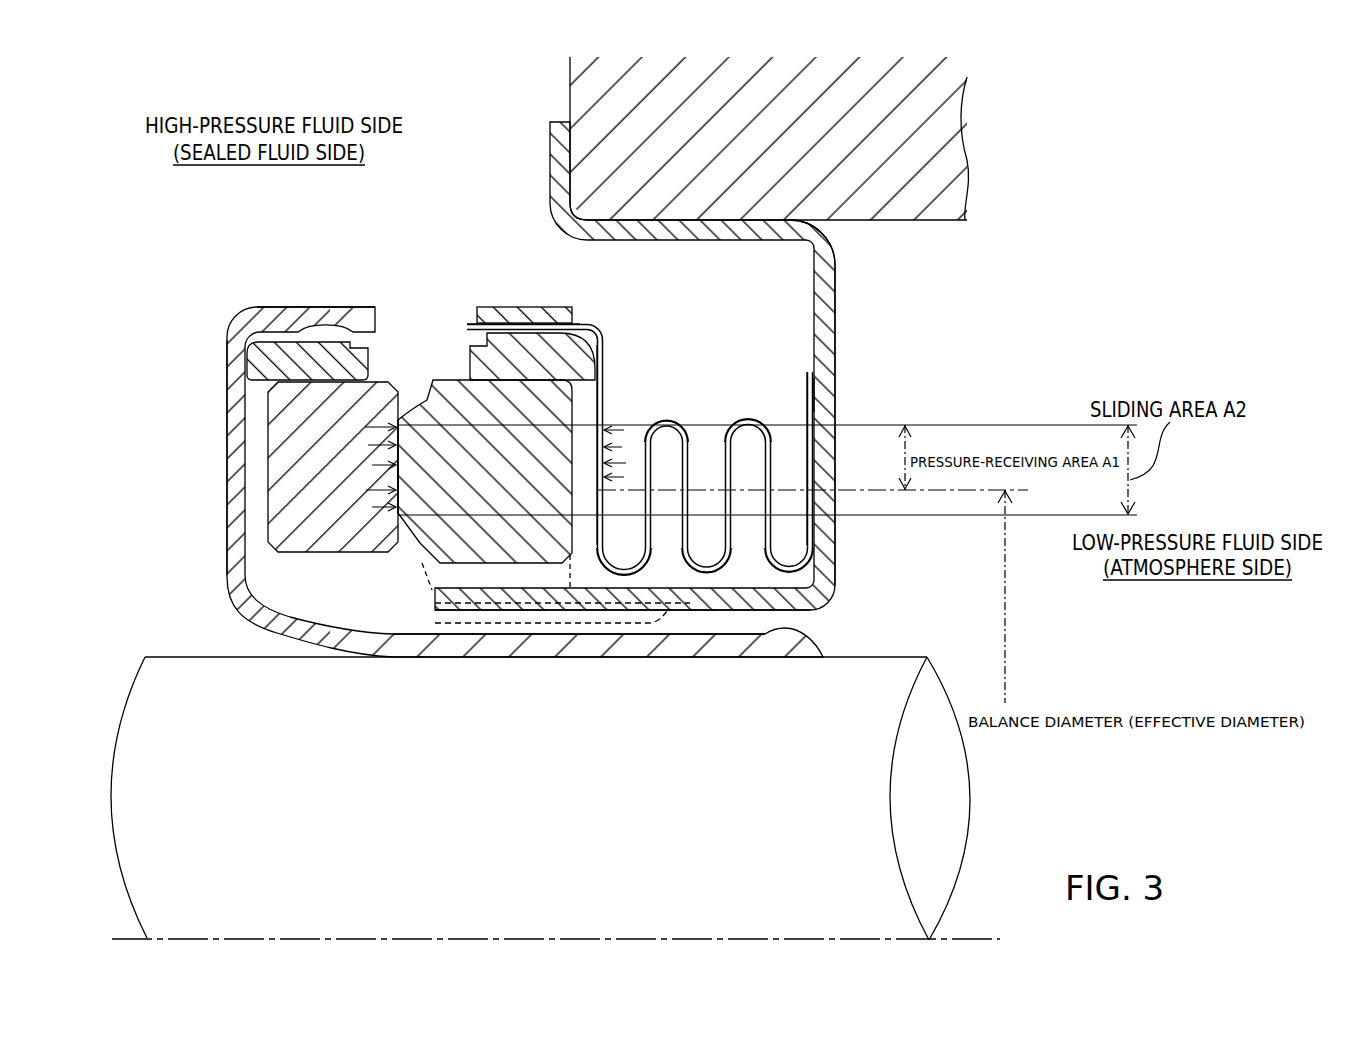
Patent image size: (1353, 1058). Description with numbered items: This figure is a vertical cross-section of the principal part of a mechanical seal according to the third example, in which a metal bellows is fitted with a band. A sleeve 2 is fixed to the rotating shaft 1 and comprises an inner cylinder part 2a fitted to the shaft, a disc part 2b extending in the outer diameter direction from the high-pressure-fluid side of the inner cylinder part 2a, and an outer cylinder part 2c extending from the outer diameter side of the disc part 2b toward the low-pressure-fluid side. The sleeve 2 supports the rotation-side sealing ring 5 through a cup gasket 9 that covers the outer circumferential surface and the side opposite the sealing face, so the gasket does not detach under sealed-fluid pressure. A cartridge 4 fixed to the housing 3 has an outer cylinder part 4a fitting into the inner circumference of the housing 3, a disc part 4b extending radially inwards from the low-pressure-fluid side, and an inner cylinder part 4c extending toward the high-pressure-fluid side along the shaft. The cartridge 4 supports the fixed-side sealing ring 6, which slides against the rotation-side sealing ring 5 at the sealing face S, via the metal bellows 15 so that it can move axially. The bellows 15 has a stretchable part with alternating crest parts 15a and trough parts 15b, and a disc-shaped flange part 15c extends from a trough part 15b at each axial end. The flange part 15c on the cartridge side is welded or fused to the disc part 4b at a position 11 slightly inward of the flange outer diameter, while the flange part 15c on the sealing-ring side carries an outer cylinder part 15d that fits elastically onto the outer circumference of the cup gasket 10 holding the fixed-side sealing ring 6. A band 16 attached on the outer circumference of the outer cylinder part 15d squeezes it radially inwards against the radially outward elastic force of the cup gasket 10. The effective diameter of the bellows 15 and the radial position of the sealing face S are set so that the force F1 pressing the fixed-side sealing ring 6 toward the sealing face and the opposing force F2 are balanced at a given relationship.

The rotating shaft 1 is at (473, 897).
The sleeve 2 is at (226, 338).
The inner cylinder part 2a is at (555, 648).
The disc part 2b is at (231, 474).
The outer cylinder part 2c is at (340, 316).
The housing 3 is at (600, 92).
The cartridge 4 is at (840, 327).
The outer cylinder part 4a is at (707, 241).
The disc part 4b is at (836, 382).
The inner cylinder part 4c is at (636, 612).
The rotation-side sealing ring 5 is at (388, 383).
The fixed-side sealing ring 6 is at (440, 390).
The cup gasket 9 is at (270, 370).
The cup gasket 10 is at (482, 355).
The welding position 11 is at (820, 394).
The bellows 15 is at (692, 436).
The crest parts 15a is at (735, 428).
The trough parts 15b is at (643, 575).
The flange part 15c is at (605, 395).
The outer cylinder part 15d is at (576, 325).
The band 16 is at (522, 310).
The sealing face S is at (398, 515).
The force F1 is at (628, 445).
The force F2 is at (364, 467).